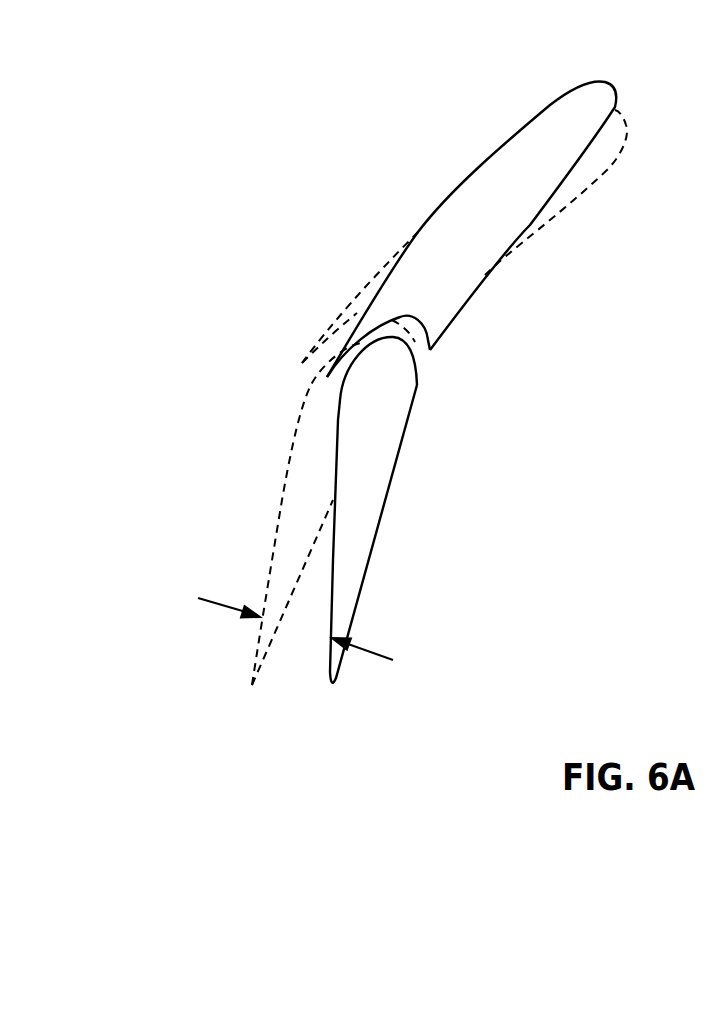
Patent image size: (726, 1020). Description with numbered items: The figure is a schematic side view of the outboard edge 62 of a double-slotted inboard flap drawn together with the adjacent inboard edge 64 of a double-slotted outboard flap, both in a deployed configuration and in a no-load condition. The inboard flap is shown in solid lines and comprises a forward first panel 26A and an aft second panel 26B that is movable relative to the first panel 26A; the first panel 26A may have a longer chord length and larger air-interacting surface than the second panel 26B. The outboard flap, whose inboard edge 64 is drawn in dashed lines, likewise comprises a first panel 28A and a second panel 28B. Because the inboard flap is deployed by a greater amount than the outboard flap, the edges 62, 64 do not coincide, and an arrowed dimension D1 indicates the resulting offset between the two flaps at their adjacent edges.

The outboard edge 62 is at (507, 381).
The inboard edge 64 is at (373, 397).
The first panel 26A is at (531, 227).
The second panel 26B is at (370, 540).
The first panel 28A is at (367, 284).
The second panel 28B is at (275, 541).
The distance D1 is at (290, 629).